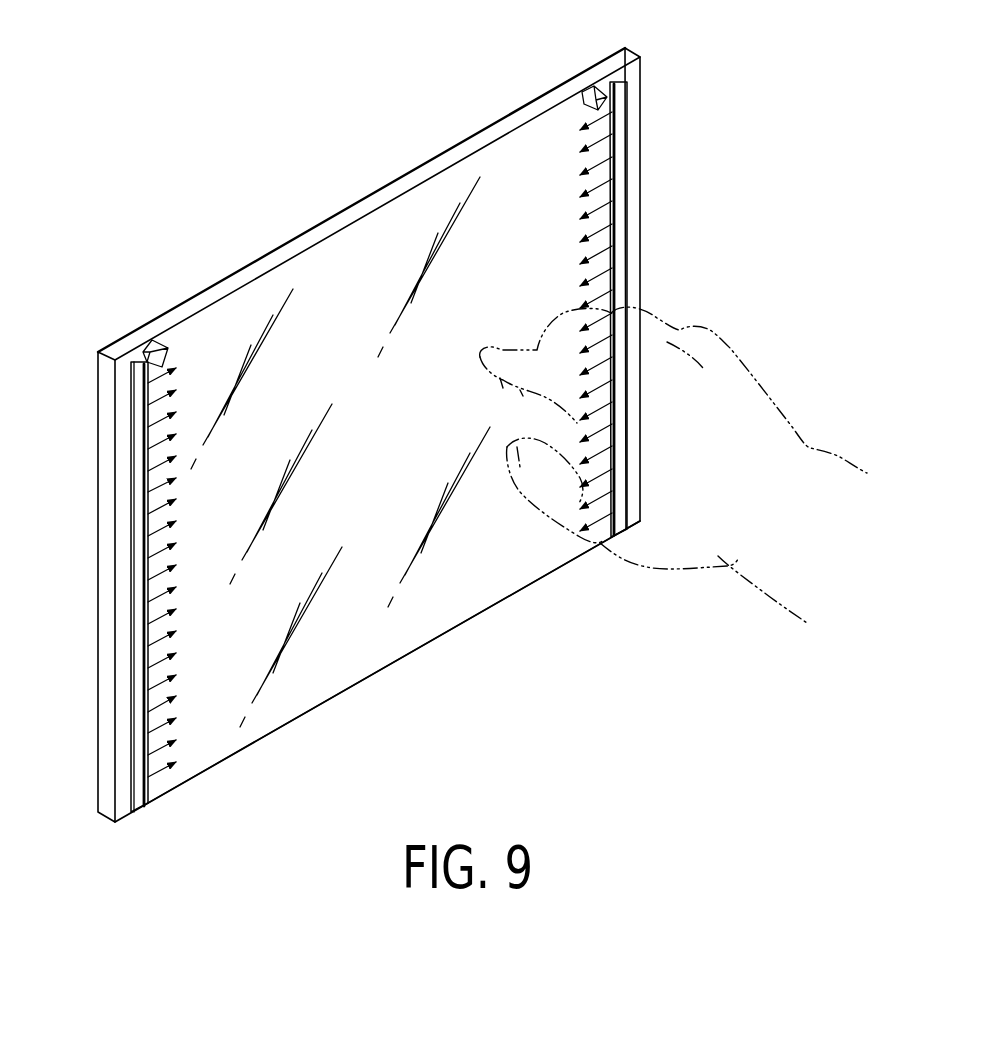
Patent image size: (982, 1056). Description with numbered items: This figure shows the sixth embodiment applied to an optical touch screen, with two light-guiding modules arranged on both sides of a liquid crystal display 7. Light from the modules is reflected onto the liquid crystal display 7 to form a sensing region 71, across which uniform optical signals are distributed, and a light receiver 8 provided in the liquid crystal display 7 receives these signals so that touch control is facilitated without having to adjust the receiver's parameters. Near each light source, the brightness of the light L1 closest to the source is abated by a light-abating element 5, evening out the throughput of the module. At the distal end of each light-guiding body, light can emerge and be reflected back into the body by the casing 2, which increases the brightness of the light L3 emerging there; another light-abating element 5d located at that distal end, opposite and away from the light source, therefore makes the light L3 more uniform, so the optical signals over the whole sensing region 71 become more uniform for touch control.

The casing 2 is at (630, 177).
The light-abating element 5 is at (625, 107).
The another light-abating element 5d is at (614, 490).
The liquid crystal display 7 is at (408, 166).
The sensing region 71 is at (323, 335).
The light receiver 8 is at (597, 95).
The light closest to the light source L1 is at (590, 150).
The light emerging at the distal end L3 is at (598, 527).